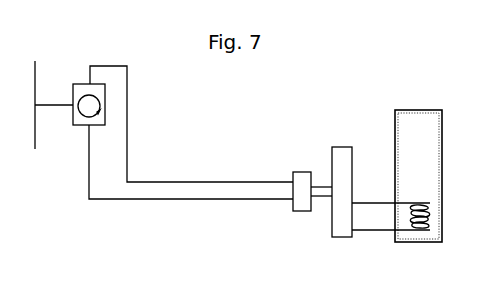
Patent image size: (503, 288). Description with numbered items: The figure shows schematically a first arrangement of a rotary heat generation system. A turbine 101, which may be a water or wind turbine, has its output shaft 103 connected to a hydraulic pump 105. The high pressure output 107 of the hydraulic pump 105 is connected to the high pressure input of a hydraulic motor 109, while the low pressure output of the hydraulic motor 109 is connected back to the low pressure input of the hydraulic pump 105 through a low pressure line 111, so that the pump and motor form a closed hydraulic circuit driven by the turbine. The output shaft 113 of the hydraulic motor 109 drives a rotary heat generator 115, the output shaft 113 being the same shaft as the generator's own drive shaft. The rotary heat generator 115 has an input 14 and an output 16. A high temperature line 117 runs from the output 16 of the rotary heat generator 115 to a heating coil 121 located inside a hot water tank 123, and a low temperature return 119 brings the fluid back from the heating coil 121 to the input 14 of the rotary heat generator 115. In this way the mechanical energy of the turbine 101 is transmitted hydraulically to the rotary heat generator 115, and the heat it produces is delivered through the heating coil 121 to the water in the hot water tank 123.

The turbine 101 is at (33, 77).
The output shaft 103 is at (53, 104).
The hydraulic pump 105 is at (79, 121).
The high pressure output 107 is at (183, 201).
The hydraulic motor 109 is at (300, 180).
The low pressure line 111 is at (191, 181).
The output shaft 113 is at (326, 193).
The rotary heat generator 115 is at (340, 150).
The input 14 is at (354, 200).
The output 16 is at (353, 233).
The high temperature line 117 is at (384, 231).
The low temperature return 119 is at (383, 202).
The heating coil 121 is at (432, 212).
The hot water tank 123 is at (444, 140).